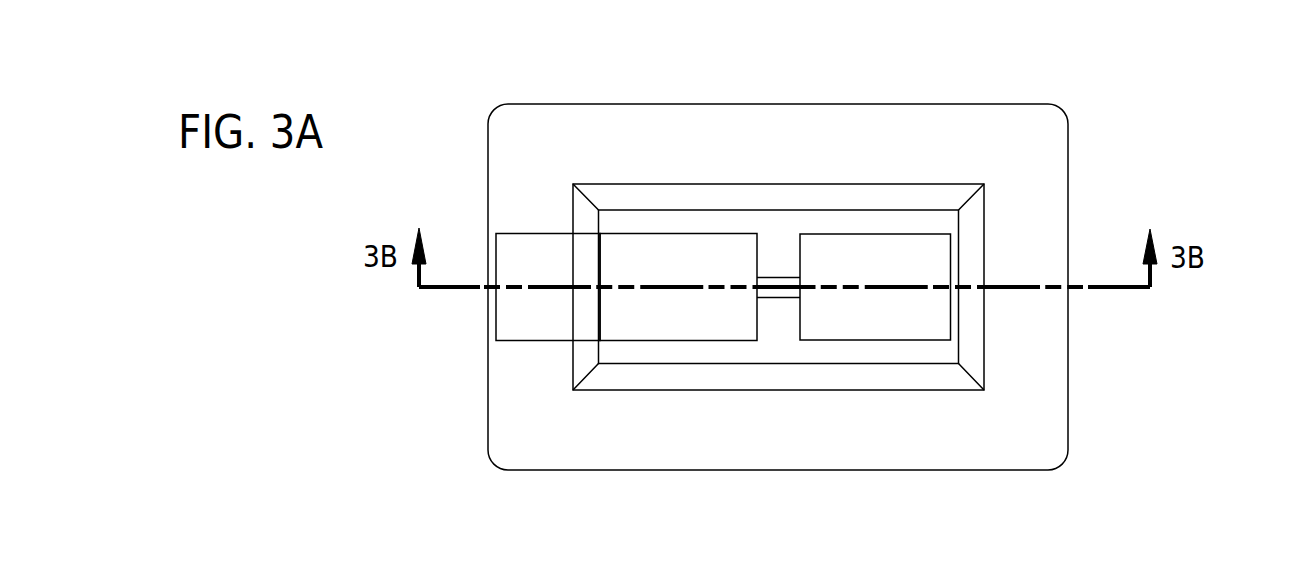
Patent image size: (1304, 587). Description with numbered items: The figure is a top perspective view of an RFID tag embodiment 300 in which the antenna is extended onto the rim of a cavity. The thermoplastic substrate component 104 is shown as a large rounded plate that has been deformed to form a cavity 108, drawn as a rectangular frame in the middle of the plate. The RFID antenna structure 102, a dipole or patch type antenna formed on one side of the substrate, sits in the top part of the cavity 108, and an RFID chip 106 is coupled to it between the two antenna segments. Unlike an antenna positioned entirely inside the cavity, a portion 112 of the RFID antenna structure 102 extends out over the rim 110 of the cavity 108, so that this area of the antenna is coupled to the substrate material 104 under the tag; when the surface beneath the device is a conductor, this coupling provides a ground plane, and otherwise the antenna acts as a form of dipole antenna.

The RFID tag with antenna extended onto rim 300 is at (1100, 82).
The thermoplastic substrate component 104 is at (1038, 433).
The rim 110 is at (552, 442).
The cavity 108 is at (932, 223).
The portion of the RFID antenna structure 112 is at (534, 322).
The RFID chip 106 is at (780, 298).
The RFID antenna structure 102 is at (888, 322).